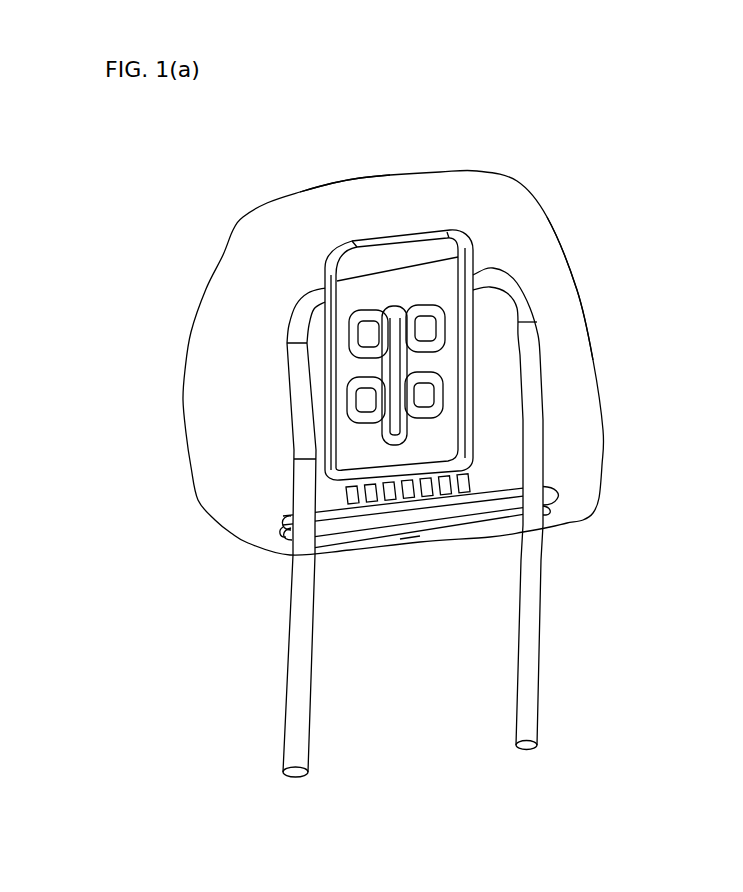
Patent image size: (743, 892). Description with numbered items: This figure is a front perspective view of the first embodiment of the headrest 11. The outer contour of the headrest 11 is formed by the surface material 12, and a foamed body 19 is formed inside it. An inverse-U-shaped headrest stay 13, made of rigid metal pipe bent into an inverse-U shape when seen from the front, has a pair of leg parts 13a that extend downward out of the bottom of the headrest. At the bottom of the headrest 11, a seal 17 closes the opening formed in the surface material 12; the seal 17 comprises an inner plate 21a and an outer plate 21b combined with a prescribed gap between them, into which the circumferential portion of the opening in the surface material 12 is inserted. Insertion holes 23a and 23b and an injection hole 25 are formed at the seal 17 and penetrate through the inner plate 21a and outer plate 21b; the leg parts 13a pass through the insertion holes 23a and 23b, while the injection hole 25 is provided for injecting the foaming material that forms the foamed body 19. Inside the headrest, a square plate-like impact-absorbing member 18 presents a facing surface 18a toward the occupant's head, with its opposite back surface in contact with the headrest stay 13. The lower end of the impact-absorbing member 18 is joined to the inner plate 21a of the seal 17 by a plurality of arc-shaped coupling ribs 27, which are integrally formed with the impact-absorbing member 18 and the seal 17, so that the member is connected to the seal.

The headrest 11 is at (548, 175).
The surface material 12 is at (373, 177).
The headrest stay 13 is at (552, 395).
The leg parts 13a is at (302, 685).
The seal 17 is at (563, 488).
The impact-absorbing member 18 is at (331, 233).
The facing surface 18a is at (352, 297).
The foamed body 19 is at (553, 262).
The inner plate 21a is at (280, 516).
The outer plate 21b is at (455, 517).
The insertion hole 23a is at (545, 511).
The insertion hole 23b is at (279, 543).
The injection hole 25 is at (405, 537).
The coupling ribs 27 is at (486, 467).